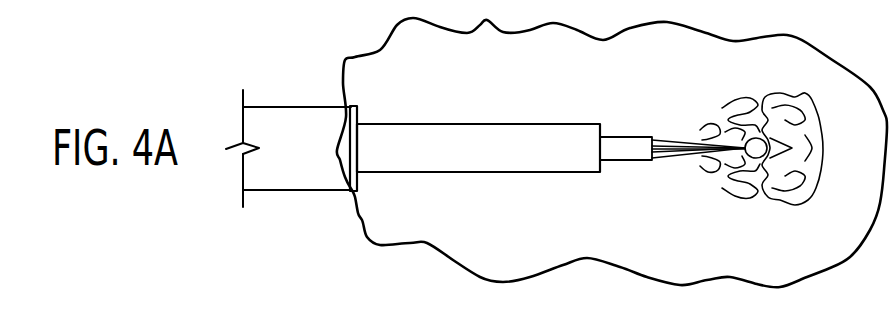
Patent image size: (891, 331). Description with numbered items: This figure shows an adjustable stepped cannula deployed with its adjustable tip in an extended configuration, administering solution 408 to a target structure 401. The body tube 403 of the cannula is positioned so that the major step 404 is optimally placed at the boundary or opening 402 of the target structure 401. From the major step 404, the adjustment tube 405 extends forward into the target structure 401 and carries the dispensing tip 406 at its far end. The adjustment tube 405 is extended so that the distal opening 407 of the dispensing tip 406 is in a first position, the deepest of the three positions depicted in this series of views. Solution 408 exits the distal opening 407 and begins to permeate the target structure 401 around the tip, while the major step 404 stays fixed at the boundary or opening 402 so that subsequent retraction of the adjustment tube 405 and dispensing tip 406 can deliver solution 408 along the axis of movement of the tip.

The target structure 401 is at (625, 80).
The boundary or opening of the target structure 402 is at (572, 150).
The body tube 403 is at (286, 179).
The major step 404 is at (405, 167).
The adjustment tube 405 is at (478, 109).
The dispensing tip 406 is at (654, 180).
The distal opening 407 is at (686, 123).
The solution 408 is at (757, 174).